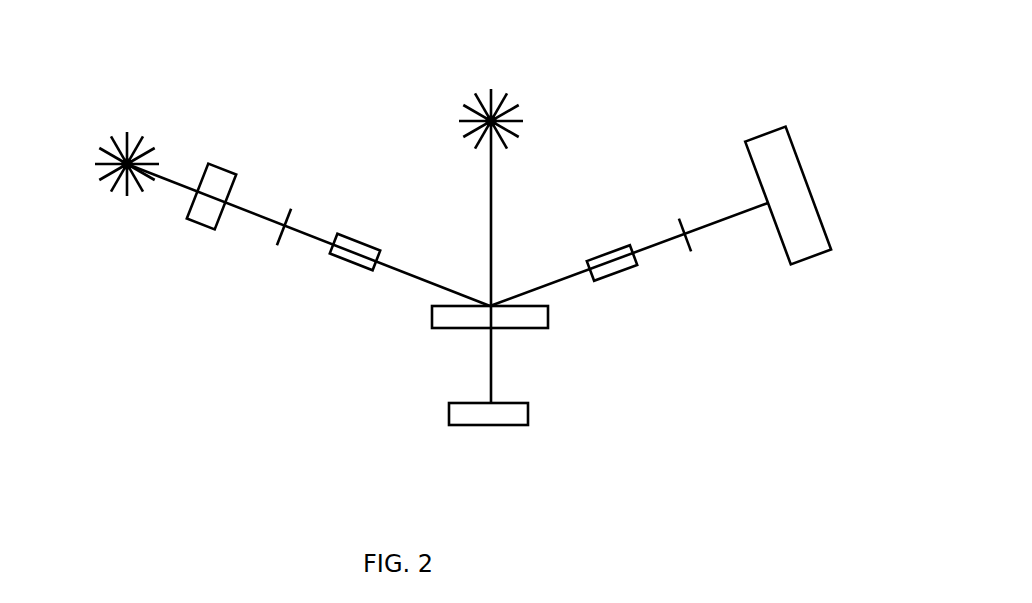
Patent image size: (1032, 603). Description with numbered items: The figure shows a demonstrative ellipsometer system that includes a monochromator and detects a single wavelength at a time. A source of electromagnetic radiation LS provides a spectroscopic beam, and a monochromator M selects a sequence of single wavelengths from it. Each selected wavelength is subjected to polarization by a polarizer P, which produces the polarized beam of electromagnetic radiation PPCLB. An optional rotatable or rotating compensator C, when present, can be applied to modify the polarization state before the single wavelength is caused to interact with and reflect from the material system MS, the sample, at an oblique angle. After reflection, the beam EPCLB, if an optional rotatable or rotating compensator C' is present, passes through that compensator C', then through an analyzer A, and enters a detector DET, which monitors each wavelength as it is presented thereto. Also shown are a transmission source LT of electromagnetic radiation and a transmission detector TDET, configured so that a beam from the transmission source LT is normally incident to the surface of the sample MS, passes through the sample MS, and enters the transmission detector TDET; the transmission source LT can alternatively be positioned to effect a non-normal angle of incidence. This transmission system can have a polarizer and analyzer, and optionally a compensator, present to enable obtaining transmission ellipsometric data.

The source of electromagnetic radiation LS is at (98, 138).
The monochromator M is at (253, 164).
The polarizer P is at (234, 252).
The rotatable or rotating compensator C is at (306, 284).
The polarized beam of electromagnetic radiation PPCLB is at (308, 235).
The transmission source of electromagnetic radiation LT is at (528, 223).
The material system MS is at (562, 334).
The transmission detector TDET is at (440, 435).
The elliptically polarized collimated light beam EPCLB is at (697, 263).
The rotatable or rotating compensator C' is at (575, 245).
The analyzer A is at (632, 213).
The detector DET is at (731, 178).